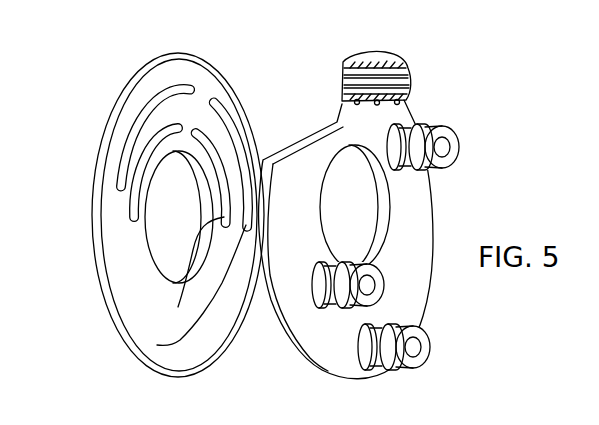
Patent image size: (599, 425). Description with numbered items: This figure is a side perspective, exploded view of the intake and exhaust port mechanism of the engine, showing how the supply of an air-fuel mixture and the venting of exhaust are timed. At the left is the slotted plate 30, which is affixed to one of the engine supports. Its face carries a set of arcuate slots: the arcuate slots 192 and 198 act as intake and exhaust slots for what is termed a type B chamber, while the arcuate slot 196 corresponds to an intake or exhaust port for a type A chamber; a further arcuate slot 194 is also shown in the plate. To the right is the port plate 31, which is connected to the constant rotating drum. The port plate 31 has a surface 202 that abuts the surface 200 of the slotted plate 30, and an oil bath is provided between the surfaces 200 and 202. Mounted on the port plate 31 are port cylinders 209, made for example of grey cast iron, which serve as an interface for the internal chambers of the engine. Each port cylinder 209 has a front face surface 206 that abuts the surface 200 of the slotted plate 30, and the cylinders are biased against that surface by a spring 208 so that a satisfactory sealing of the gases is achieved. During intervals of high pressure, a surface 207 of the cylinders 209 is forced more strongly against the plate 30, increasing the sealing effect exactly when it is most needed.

The slotted plate 30 is at (168, 53).
The port plate 31 is at (430, 209).
The arcuate slot 192 is at (193, 88).
The outer arcuate slot 194 is at (214, 110).
The arcuate slot 196 is at (178, 307).
The arcuate slot 198 is at (157, 345).
The surface 200 is at (183, 368).
The surface 202 is at (302, 364).
The front face surface 206 is at (360, 33).
The surface 207 is at (447, 131).
The spring 208 is at (397, 63).
The port cylinder 209 is at (398, 79).